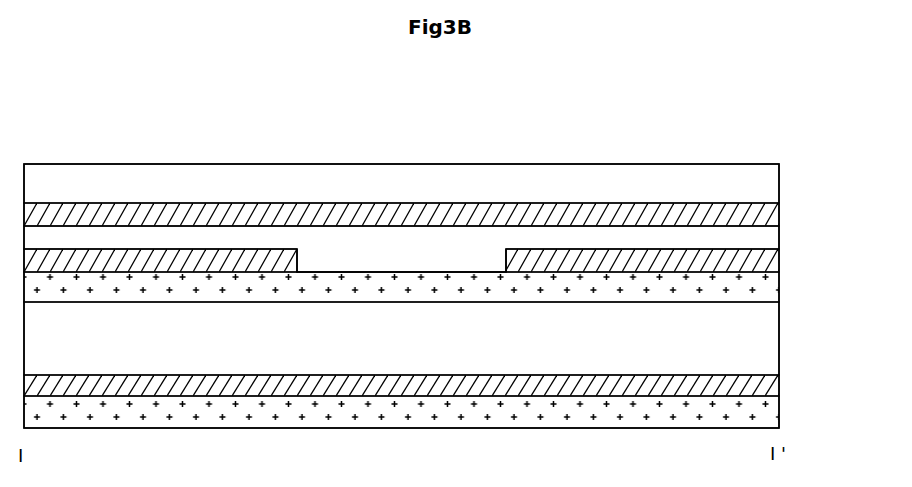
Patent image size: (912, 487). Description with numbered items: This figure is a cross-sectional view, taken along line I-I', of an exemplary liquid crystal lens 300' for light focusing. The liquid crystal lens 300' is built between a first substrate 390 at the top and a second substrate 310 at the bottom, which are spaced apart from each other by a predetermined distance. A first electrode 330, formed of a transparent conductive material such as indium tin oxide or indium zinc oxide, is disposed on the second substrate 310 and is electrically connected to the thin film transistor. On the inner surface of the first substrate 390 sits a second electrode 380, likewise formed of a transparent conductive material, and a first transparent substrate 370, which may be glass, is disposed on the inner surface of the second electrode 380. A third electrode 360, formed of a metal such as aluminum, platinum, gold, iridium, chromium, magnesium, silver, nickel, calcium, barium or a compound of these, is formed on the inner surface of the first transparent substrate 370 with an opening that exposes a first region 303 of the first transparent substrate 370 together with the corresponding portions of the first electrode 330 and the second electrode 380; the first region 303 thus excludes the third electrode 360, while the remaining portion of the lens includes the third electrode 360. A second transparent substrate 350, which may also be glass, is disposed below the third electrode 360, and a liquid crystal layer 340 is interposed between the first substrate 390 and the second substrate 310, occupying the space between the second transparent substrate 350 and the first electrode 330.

The liquid crystal lens 300' is at (415, 240).
The first region 303 is at (455, 252).
The second substrate 310 is at (780, 410).
The first electrode 330 is at (780, 385).
The liquid crystal layer 340 is at (780, 337).
The second transparent substrate 350 is at (780, 284).
The third electrode 360 is at (780, 259).
The first transparent substrate 370 is at (780, 234).
The second electrode 380 is at (780, 213).
The first substrate 390 is at (780, 181).